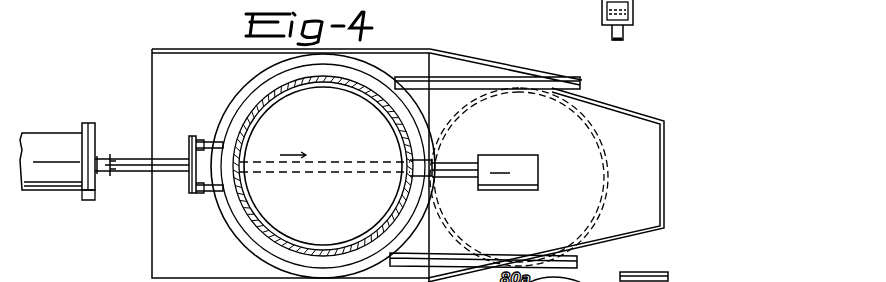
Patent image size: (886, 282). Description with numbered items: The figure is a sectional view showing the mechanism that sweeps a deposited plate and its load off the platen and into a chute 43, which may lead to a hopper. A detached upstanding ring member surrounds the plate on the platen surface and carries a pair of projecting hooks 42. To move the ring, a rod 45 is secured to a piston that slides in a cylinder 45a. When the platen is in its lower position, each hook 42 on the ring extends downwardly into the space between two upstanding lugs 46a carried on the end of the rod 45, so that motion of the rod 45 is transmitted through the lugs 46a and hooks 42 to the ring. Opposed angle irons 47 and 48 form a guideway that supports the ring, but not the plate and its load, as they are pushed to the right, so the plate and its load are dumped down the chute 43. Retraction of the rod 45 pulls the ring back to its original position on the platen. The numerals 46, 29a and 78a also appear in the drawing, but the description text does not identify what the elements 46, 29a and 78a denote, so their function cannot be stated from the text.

The projecting hooks 42 is at (196, 137).
The chute 43 is at (614, 110).
The rod 45 is at (97, 172).
The cylinder 45a is at (50, 142).
The mounting plate 46 is at (228, 176).
The upstanding lugs 46a is at (190, 143).
The angle iron 47 is at (466, 66).
The angle iron 48 is at (440, 256).
The sensor unit 29a is at (637, 2).
The guide member 78a is at (700, 281).